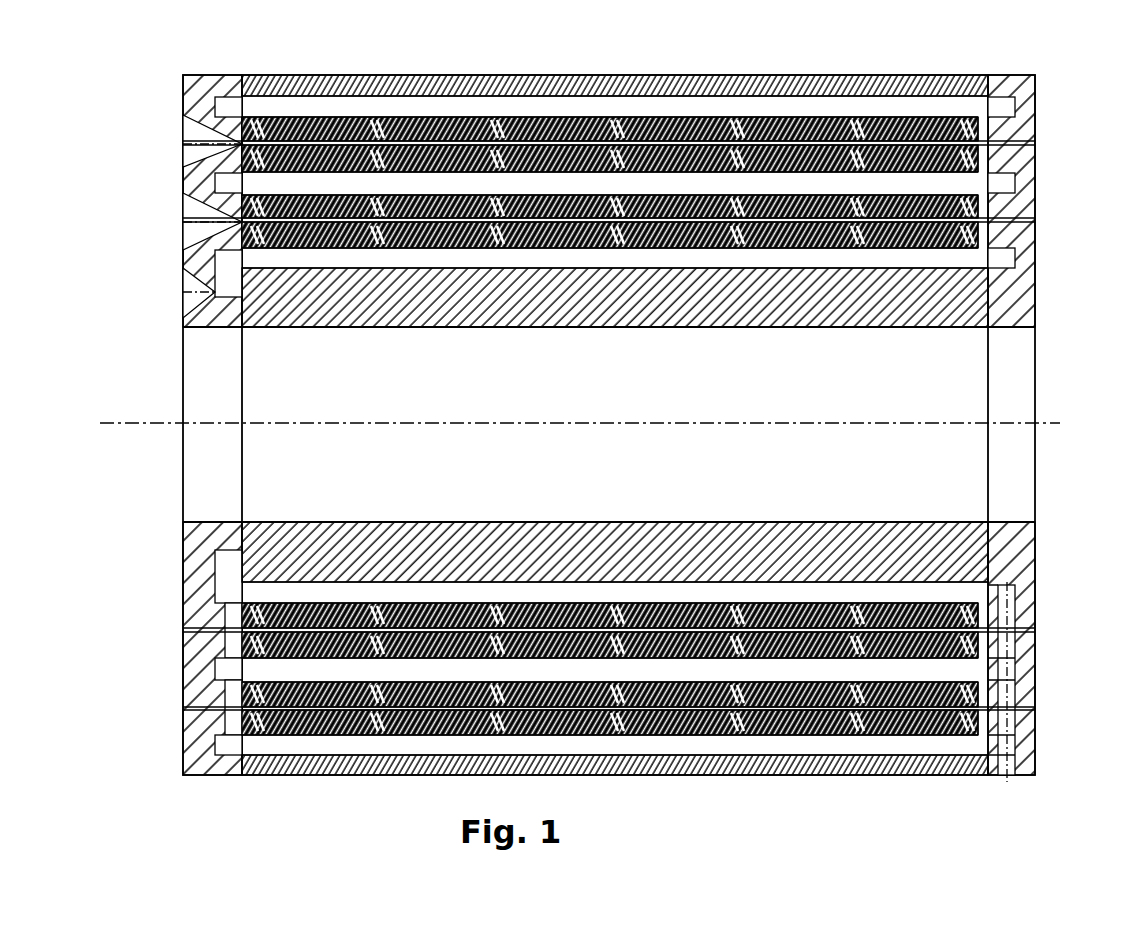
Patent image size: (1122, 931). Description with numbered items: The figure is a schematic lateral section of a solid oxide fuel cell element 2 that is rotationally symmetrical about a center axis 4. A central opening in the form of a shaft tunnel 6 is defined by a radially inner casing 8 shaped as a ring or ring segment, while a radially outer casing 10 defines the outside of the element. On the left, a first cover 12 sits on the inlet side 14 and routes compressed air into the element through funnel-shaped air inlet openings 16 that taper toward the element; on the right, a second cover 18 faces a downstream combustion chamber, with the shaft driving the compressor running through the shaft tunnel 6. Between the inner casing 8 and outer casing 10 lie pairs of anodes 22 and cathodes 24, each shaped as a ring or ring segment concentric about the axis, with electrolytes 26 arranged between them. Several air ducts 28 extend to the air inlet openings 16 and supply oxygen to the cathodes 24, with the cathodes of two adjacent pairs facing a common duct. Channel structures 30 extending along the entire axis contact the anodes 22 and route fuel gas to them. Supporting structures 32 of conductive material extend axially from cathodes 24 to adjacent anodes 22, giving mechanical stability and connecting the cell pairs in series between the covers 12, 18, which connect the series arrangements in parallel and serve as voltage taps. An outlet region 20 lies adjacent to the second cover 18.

The solid oxide fuel cell element 2 is at (697, 62).
The center axis 4 is at (125, 423).
The shaft tunnel 6 is at (975, 395).
The radially inner casing 8 is at (833, 315).
The radially outer casing 10 is at (908, 80).
The first cover 12 is at (222, 781).
The inlet side 14 is at (248, 781).
The air inlet openings 16 is at (188, 153).
The second cover 18 is at (1007, 789).
The end ring 20 is at (992, 779).
The anodes 22 is at (918, 248).
The cathodes 24 is at (943, 228).
The electrolytes 26 is at (300, 115).
The air ducts 28 is at (1015, 215).
The channel structures 30 is at (970, 107).
The supporting structures 32 is at (372, 603).